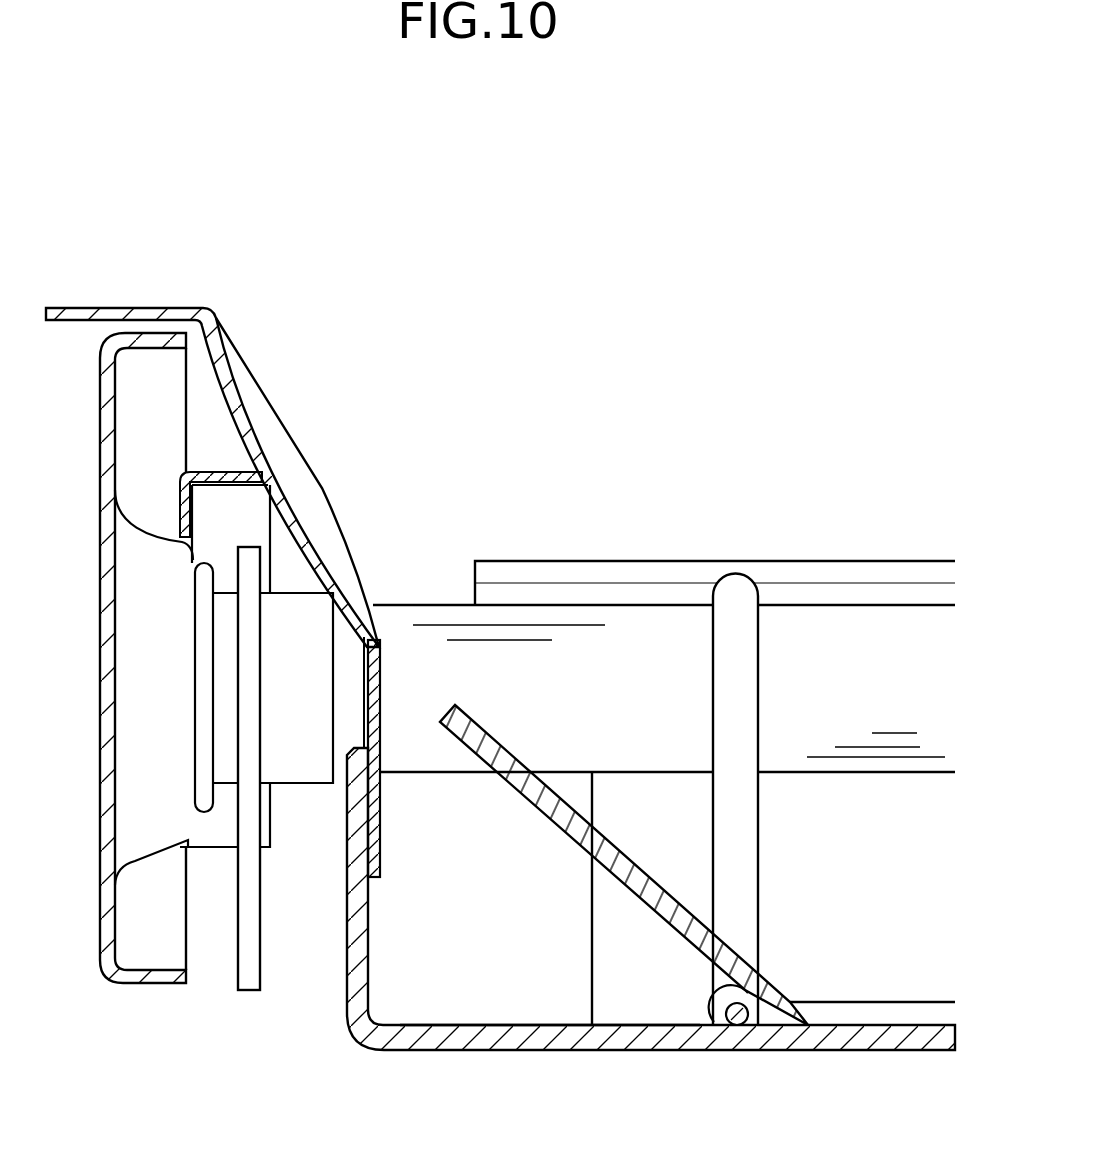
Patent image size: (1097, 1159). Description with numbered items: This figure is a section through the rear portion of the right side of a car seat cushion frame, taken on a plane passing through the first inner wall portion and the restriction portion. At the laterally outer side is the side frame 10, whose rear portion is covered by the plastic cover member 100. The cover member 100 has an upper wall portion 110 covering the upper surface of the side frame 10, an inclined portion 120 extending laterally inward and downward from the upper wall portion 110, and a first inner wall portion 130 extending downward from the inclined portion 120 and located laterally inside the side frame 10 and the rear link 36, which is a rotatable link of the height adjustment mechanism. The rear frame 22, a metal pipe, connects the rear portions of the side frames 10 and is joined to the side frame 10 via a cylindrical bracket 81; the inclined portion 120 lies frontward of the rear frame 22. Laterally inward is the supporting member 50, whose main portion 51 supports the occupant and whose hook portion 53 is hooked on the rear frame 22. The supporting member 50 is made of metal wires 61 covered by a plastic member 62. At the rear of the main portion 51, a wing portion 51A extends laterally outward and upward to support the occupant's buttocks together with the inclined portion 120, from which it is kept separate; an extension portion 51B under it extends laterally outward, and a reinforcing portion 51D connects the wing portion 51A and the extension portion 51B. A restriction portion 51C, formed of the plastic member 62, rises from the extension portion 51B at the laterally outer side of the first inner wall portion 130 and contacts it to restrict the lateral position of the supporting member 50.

The side frame 10 is at (148, 988).
The rear frame 22 is at (650, 635).
The rear link 36 is at (250, 990).
The supporting member 50 is at (651, 939).
The main portion 51 is at (651, 933).
The wing portion 51A is at (620, 862).
The extension portion 51B is at (520, 1052).
The restriction portion 51C is at (362, 898).
The reinforcing portion 51D is at (640, 998).
The hook portion 53 is at (833, 570).
The metal wire 61 is at (758, 1008).
The plastic member 62 is at (723, 1028).
The cylindrical bracket 81 is at (306, 770).
The cover member 100 is at (221, 443).
The upper wall portion 110 is at (115, 302).
The inclined portion 120 is at (303, 473).
The first inner wall portion 130 is at (380, 832).